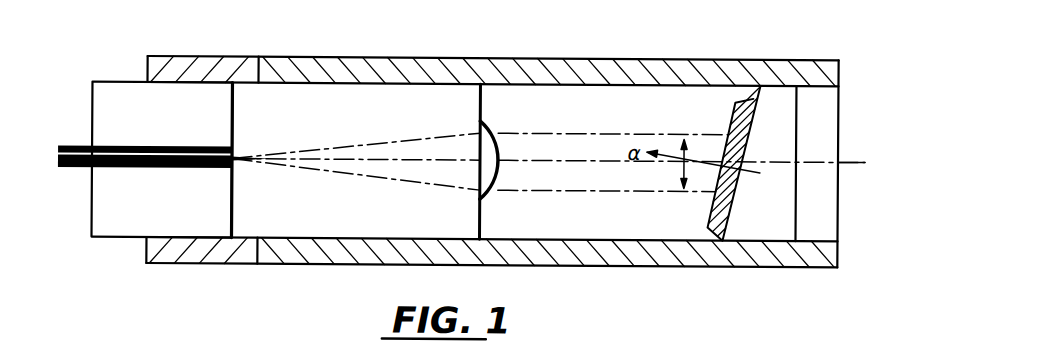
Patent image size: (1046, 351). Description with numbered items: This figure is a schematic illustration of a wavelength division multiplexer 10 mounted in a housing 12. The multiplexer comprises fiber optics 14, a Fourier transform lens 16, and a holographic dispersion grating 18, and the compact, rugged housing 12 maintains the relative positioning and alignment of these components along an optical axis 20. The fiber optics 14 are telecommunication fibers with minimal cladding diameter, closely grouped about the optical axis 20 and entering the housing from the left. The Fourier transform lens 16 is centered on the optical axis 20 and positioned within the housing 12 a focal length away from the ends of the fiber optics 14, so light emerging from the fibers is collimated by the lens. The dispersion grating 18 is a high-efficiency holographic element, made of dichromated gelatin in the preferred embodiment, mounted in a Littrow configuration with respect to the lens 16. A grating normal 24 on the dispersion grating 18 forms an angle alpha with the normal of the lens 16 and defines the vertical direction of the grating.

The wavelength division multiplexer 10 is at (518, 159).
The housing 12 is at (621, 264).
The fiber optics 14 is at (198, 168).
The Fourier transform lens 16 is at (487, 123).
The holographic dispersion grating 18 is at (733, 206).
The optical axis 20 is at (856, 158).
The grating normal 24 is at (704, 148).